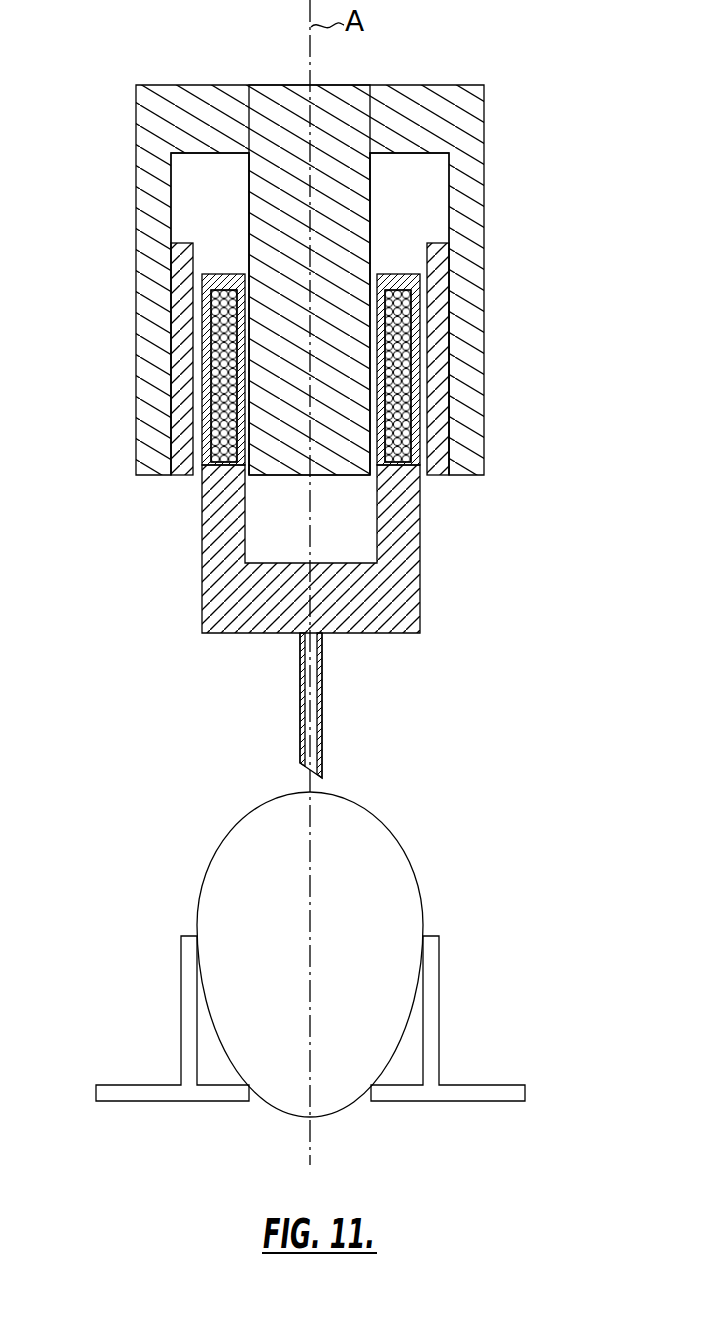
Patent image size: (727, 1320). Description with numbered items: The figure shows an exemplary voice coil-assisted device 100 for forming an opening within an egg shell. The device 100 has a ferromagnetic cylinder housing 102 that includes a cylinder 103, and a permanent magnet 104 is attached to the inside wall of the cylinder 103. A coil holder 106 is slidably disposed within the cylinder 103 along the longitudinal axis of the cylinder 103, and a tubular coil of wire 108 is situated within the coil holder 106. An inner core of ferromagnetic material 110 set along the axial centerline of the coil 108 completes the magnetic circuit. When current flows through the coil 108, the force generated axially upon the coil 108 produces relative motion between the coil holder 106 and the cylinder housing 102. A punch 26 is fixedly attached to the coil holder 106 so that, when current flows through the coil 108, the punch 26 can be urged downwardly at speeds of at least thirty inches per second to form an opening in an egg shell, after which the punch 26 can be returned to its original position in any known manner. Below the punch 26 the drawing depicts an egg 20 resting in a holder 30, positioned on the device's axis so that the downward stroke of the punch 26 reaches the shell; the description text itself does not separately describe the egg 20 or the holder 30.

The voice coil-assisted device 100 is at (532, 150).
The ferromagnetic cylinder housing 102 is at (486, 410).
The cylinder 103 is at (197, 210).
The permanent magnet 104 is at (186, 478).
The coil holder 106 is at (420, 600).
The tubular coil of wire 108 is at (207, 319).
The inner core of ferromagnetic material 110 is at (345, 232).
The punch 26 is at (322, 718).
The egg 20 is at (412, 862).
The egg holder 30 is at (440, 1000).